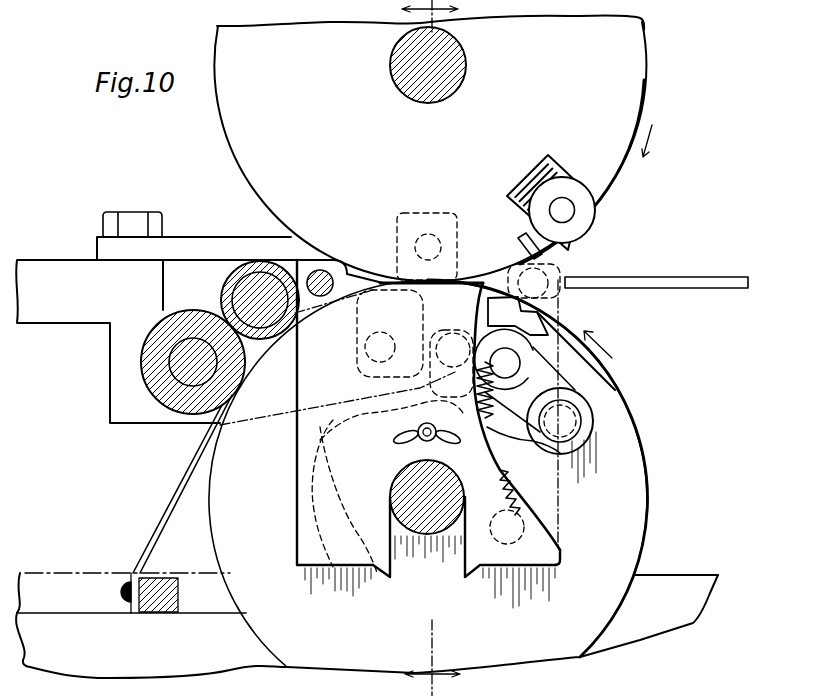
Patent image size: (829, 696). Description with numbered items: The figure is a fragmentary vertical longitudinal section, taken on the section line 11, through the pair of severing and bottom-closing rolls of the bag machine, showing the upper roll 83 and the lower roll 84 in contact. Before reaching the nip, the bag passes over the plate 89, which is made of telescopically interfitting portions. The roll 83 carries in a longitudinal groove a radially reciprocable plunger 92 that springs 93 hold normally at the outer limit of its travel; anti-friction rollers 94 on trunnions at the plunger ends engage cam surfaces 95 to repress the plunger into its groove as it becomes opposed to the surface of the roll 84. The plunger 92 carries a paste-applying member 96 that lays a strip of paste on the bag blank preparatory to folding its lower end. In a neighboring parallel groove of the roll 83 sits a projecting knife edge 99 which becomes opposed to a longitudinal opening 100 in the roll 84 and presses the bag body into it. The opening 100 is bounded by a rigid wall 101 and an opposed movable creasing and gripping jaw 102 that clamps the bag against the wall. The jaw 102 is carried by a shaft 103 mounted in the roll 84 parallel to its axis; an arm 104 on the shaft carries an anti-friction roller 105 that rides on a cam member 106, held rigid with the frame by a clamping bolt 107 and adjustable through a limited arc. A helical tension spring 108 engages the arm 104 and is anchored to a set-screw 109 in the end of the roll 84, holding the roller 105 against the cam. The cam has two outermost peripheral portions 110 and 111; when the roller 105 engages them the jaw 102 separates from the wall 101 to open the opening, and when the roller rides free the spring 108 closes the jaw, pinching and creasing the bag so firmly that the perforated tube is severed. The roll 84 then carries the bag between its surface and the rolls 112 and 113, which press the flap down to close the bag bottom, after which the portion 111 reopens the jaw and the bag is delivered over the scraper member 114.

The section line 11 is at (431, 348).
The roll 83 is at (637, 63).
The roll 84 is at (640, 468).
The plate 89 is at (698, 277).
The plunger 92 is at (582, 173).
The springs 93 is at (548, 173).
The anti-friction rollers 94 is at (610, 203).
The cam surfaces 95 is at (470, 289).
The paste-applying member 96 is at (575, 248).
The knife edge 99 is at (512, 239).
The opening 100 is at (530, 295).
The rigid wall 101 is at (530, 341).
The creasing and gripping jaw 102 is at (477, 337).
The shaft 103 is at (505, 363).
The arm 104 is at (582, 408).
The anti-friction roller 105 is at (592, 440).
The cam member 106 is at (540, 515).
The clamping bolt 107 is at (408, 452).
The helical tension spring 108 is at (520, 482).
The set-screw 109 is at (563, 547).
The peripheral portion 110 is at (533, 437).
The peripheral portion 111 is at (450, 520).
The roll 112 is at (246, 262).
The roll 113 is at (143, 361).
The scraper member 114 is at (160, 469).